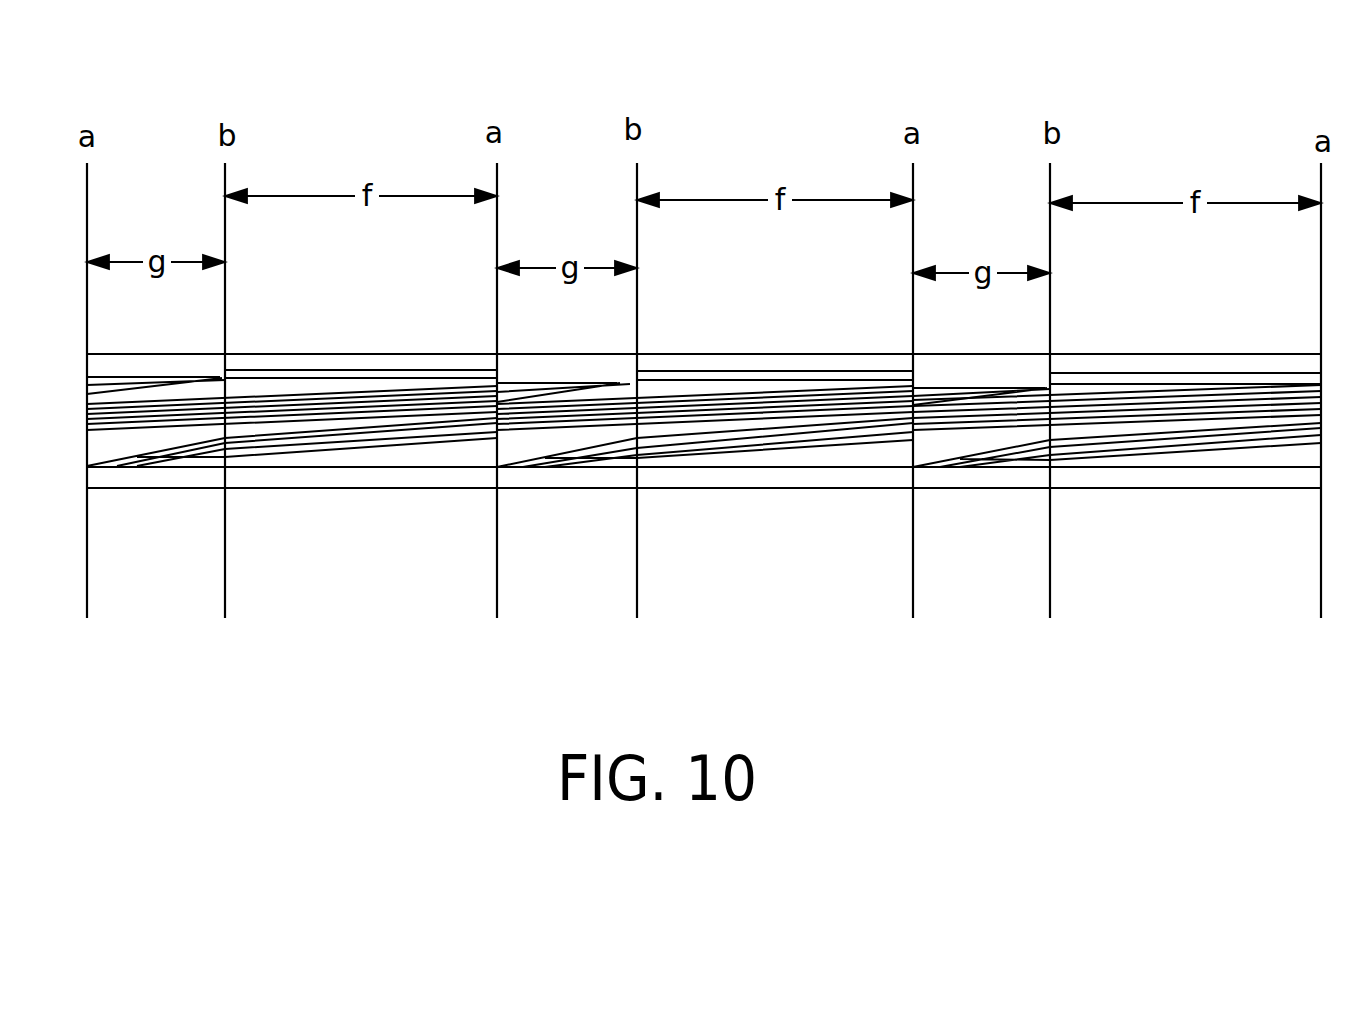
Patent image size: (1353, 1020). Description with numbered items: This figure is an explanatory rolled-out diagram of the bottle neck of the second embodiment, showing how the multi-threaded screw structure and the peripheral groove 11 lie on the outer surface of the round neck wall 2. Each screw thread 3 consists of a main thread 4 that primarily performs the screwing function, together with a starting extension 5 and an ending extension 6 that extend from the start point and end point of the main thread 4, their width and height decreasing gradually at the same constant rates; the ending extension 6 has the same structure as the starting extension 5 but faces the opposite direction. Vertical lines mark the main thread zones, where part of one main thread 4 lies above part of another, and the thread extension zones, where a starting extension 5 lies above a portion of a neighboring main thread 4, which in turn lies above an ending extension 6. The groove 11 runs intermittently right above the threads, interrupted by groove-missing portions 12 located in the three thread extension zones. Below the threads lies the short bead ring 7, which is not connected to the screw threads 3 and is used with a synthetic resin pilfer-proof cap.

The round neck wall 2 is at (848, 362).
The screw thread 3 is at (260, 448).
The main thread 4 is at (363, 445).
The starting extension 5 is at (175, 377).
The ending extension 6 is at (125, 462).
The bead ring 7 is at (788, 478).
The groove 11 is at (355, 375).
The groove-missing portion 12 is at (148, 368).